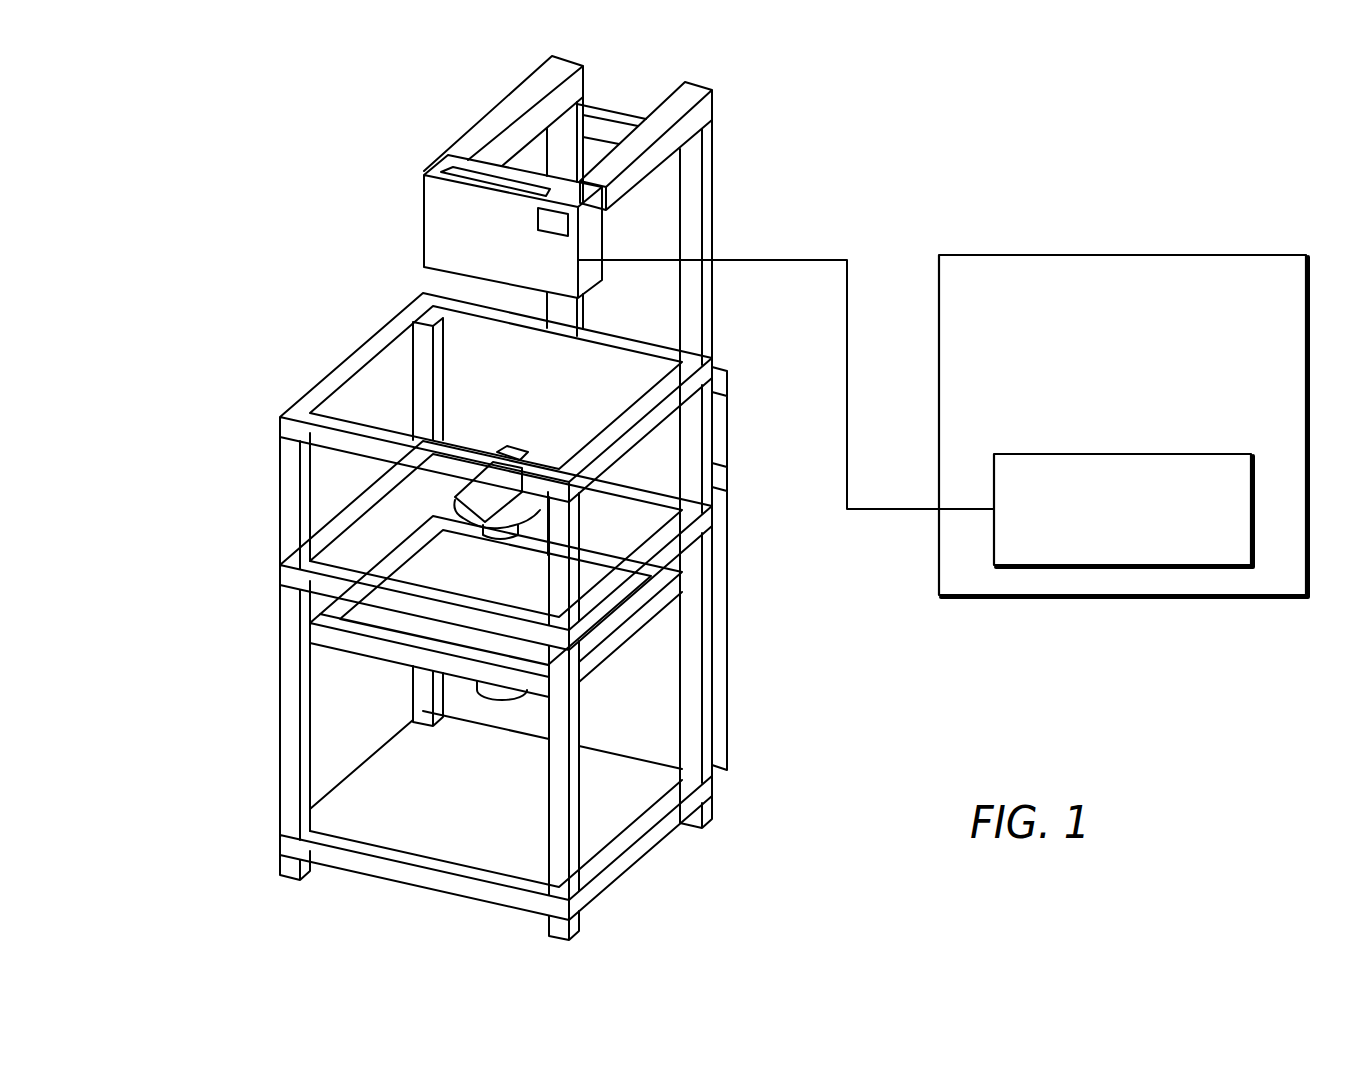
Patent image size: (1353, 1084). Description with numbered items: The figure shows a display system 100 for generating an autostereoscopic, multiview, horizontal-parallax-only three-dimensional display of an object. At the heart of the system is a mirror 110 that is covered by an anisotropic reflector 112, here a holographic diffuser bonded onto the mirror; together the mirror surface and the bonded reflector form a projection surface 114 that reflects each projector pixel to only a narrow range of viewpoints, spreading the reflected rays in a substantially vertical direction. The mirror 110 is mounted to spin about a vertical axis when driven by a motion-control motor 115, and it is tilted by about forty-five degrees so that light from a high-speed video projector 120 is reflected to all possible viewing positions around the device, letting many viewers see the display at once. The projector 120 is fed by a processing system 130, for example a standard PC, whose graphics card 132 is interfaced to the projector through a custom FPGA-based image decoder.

The 3D display system 100 is at (273, 902).
The mirror 110 is at (463, 510).
The anisotropic reflector 112 is at (518, 448).
The projection surface 114 is at (480, 497).
The motion-control motor 115 is at (497, 685).
The high-speed video projector 120 is at (437, 241).
The processing system 130 is at (1216, 255).
The graphics card 132 is at (1072, 565).